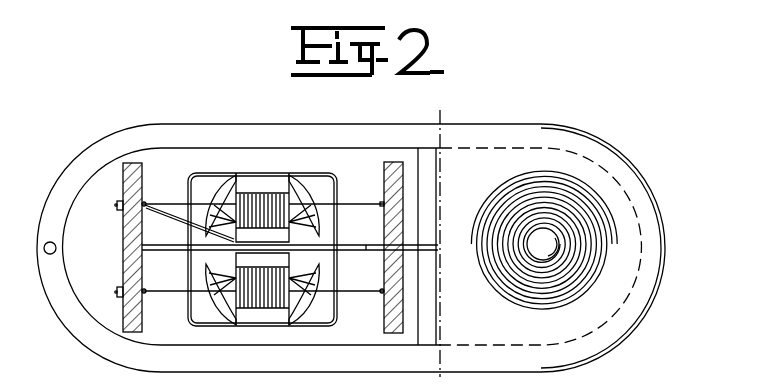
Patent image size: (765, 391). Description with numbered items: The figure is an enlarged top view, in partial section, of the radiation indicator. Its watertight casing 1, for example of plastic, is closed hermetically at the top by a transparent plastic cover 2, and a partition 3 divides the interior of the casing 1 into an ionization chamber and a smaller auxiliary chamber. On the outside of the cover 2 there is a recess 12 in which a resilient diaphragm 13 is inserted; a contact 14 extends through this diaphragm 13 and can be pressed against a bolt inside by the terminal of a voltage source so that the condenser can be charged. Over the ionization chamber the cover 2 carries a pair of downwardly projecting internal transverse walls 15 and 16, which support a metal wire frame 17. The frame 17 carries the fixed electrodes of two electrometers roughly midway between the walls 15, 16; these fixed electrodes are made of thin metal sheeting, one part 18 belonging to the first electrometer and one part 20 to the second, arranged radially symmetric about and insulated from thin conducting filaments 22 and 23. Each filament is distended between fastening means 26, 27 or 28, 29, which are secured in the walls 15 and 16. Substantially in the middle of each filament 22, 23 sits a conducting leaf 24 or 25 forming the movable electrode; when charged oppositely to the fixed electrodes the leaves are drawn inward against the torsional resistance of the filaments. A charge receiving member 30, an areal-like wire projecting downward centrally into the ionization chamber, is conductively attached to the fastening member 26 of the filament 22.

The casing 1 is at (383, 126).
The cover 2 is at (590, 143).
The partition 3 is at (425, 177).
The recess 12 is at (582, 184).
The resilient diaphragm 13 is at (520, 286).
The contact 14 is at (534, 234).
The internal transverse wall 15 is at (124, 251).
The internal transverse wall 16 is at (398, 276).
The metal wire frame 17 is at (334, 180).
The fixed electrode part 18 is at (301, 197).
The fixed electrode part 20 is at (299, 307).
The conducting filament 22 is at (160, 204).
The conducting filament 23 is at (165, 293).
The conducting leaf 24 is at (250, 193).
The conducting leaf 25 is at (260, 309).
The fastening means 26 is at (116, 206).
The fastening means 27 is at (381, 205).
The fastening means 28 is at (117, 292).
The fastening means 29 is at (382, 289).
The charge receiving member 30 is at (163, 213).